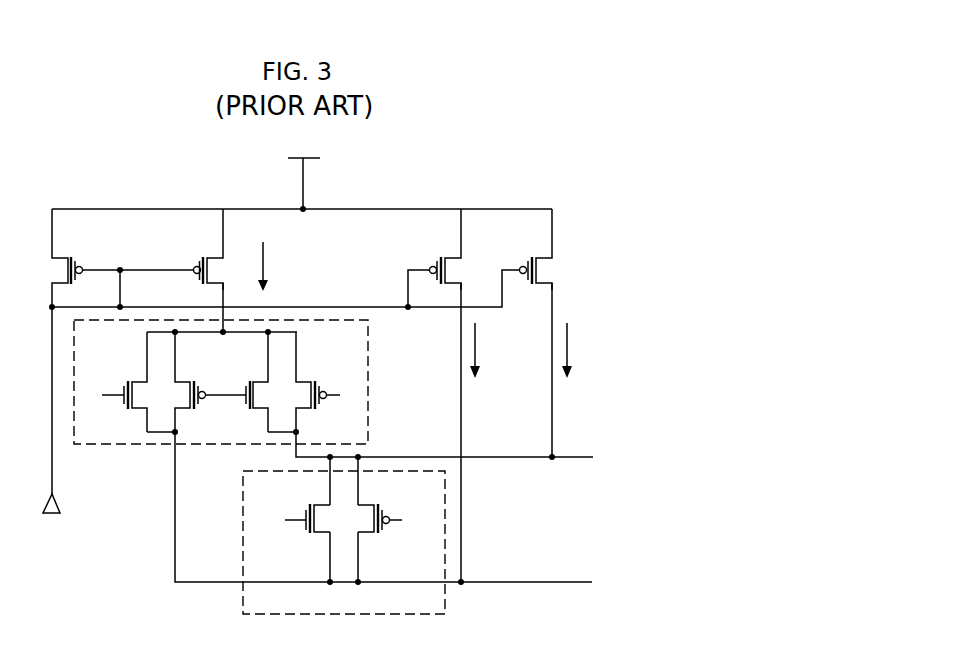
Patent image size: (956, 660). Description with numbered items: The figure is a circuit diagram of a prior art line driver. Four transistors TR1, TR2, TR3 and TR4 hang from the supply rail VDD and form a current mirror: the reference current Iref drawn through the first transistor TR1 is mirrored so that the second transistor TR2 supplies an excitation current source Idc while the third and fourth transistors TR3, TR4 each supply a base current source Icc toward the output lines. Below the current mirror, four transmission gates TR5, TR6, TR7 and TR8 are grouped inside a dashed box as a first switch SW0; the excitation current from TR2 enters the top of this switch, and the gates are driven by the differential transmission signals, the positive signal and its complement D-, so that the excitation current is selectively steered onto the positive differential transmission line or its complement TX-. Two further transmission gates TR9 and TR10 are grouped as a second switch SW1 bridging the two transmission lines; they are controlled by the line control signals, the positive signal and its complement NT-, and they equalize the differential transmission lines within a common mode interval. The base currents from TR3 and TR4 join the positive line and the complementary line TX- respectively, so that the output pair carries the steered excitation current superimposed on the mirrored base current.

The transistor TR1 is at (52, 352).
The transistor TR2 is at (224, 249).
The transistor TR3 is at (461, 249).
The transistor TR4 is at (552, 249).
The transmission gate TR5 is at (131, 382).
The transmission gate TR6 is at (191, 382).
The transmission gate TR7 is at (252, 382).
The transmission gate TR8 is at (311, 382).
The transmission gate TR9 is at (313, 506).
The transmission gate TR10 is at (378, 506).
The first switch SW0 is at (221, 382).
The second switch SW1 is at (344, 542).
The supply voltage VDD is at (306, 145).
The excitation current source Idc is at (276, 266).
The base current source Icc is at (533, 350).
The reference current Iref is at (48, 518).
The differential transmission signal D- is at (219, 406).
The line control signal NT- is at (425, 519).
The differential transmission line TX- is at (616, 581).